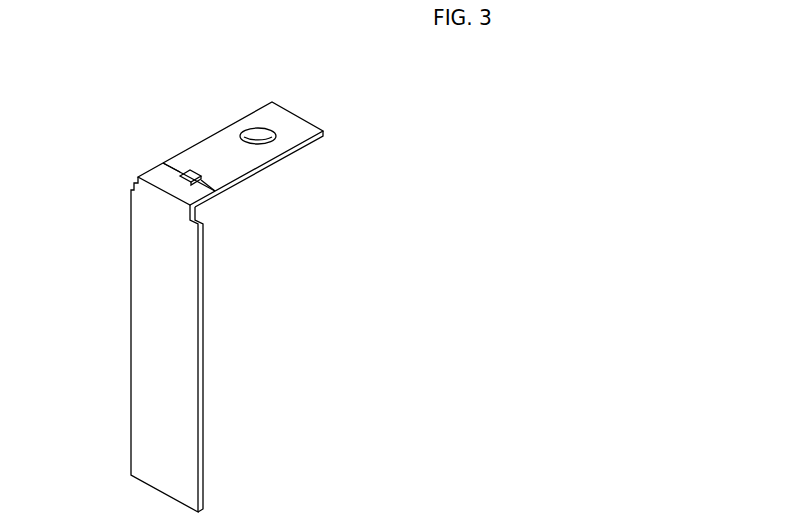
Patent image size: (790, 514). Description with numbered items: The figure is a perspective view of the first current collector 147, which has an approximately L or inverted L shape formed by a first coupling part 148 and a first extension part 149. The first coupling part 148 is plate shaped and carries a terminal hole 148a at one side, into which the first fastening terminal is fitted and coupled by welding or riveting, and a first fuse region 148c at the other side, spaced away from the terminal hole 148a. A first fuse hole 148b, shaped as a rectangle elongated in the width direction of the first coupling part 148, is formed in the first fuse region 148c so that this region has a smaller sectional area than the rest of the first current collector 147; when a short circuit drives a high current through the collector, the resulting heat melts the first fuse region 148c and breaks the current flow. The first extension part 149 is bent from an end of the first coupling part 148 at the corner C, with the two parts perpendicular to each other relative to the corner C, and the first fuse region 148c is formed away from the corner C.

The first current collector 147 is at (118, 170).
The first coupling part 148 is at (223, 138).
The terminal hole 148a is at (259, 137).
The first fuse hole 148b is at (192, 172).
The first fuse region 148c is at (168, 165).
The first extension part 149 is at (143, 293).
The corner C is at (165, 193).